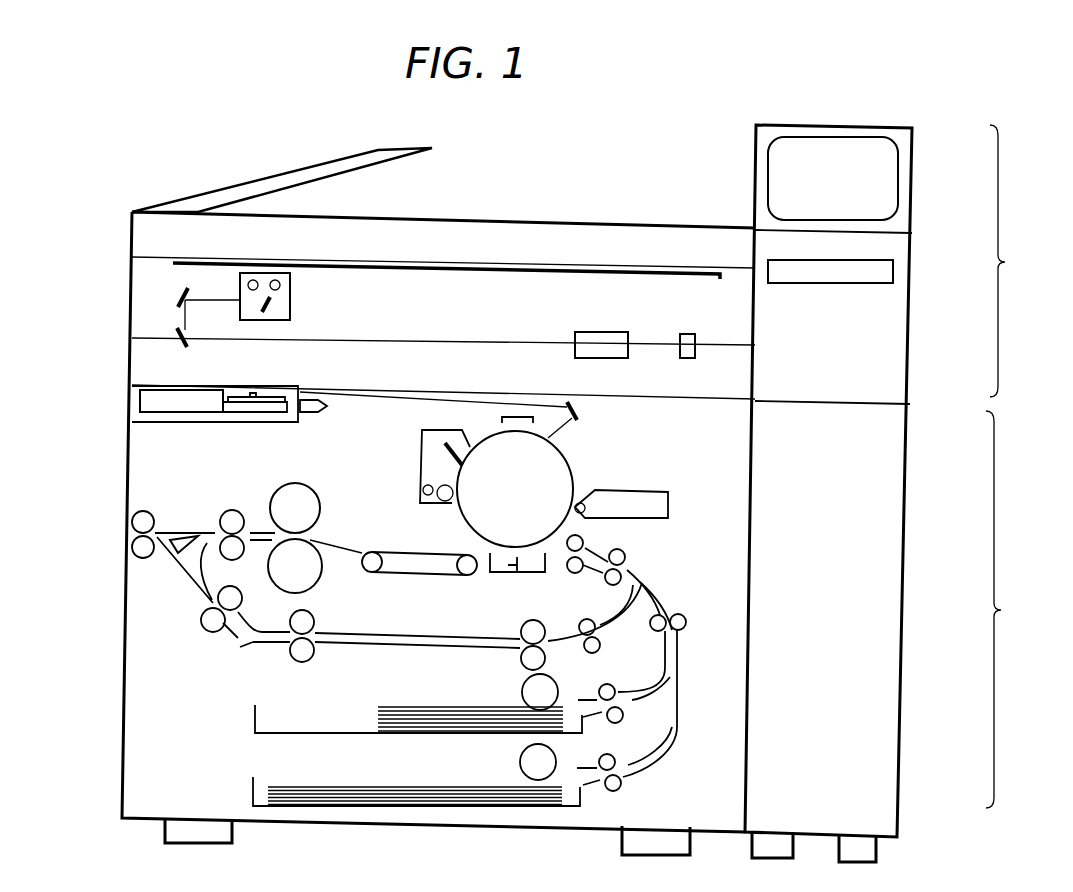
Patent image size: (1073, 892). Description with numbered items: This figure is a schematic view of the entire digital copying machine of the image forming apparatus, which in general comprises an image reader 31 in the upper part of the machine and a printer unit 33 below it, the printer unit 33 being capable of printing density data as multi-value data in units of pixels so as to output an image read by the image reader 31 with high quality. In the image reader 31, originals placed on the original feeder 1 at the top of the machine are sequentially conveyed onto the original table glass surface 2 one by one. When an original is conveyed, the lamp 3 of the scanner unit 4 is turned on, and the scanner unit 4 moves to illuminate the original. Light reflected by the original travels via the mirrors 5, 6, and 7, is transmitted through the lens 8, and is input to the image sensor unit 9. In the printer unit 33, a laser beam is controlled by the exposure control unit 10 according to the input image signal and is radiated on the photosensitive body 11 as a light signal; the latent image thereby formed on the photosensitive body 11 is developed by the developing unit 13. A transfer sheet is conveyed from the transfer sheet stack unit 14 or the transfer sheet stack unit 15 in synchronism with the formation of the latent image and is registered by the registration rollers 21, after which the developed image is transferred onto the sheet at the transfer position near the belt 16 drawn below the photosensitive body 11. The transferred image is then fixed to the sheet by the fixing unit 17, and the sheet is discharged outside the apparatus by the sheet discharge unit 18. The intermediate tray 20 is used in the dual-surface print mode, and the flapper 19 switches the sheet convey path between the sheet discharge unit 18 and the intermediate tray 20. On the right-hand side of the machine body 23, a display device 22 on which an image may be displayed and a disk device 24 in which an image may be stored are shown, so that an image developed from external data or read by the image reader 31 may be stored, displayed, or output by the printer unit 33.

The original feeder 1 is at (208, 193).
The original table glass surface 2 is at (695, 270).
The lamp 3 is at (255, 285).
The scanner unit 4 is at (277, 286).
The mirror 5 is at (262, 305).
The mirror 6 is at (183, 297).
The mirror 7 is at (183, 337).
The lens 8 is at (600, 332).
The image sensor unit 9 is at (695, 350).
The exposure control unit 10 is at (245, 396).
The photosensitive body 11 is at (517, 445).
The developing unit 13 is at (668, 505).
The transfer sheet stack unit 14 is at (615, 725).
The transfer sheet stack unit 15 is at (560, 793).
The transfer belt 16 is at (545, 572).
The fixing unit 17 is at (270, 562).
The sheet discharge unit 18 is at (138, 548).
The flapper 19 is at (175, 548).
The intermediate tray 20 is at (367, 645).
The registration rollers 21 is at (590, 542).
The display device 22 is at (898, 173).
The main body 23 is at (897, 459).
The disk device 24 is at (893, 270).
The image reader 31 is at (1014, 261).
The printer unit 33 is at (1011, 609).